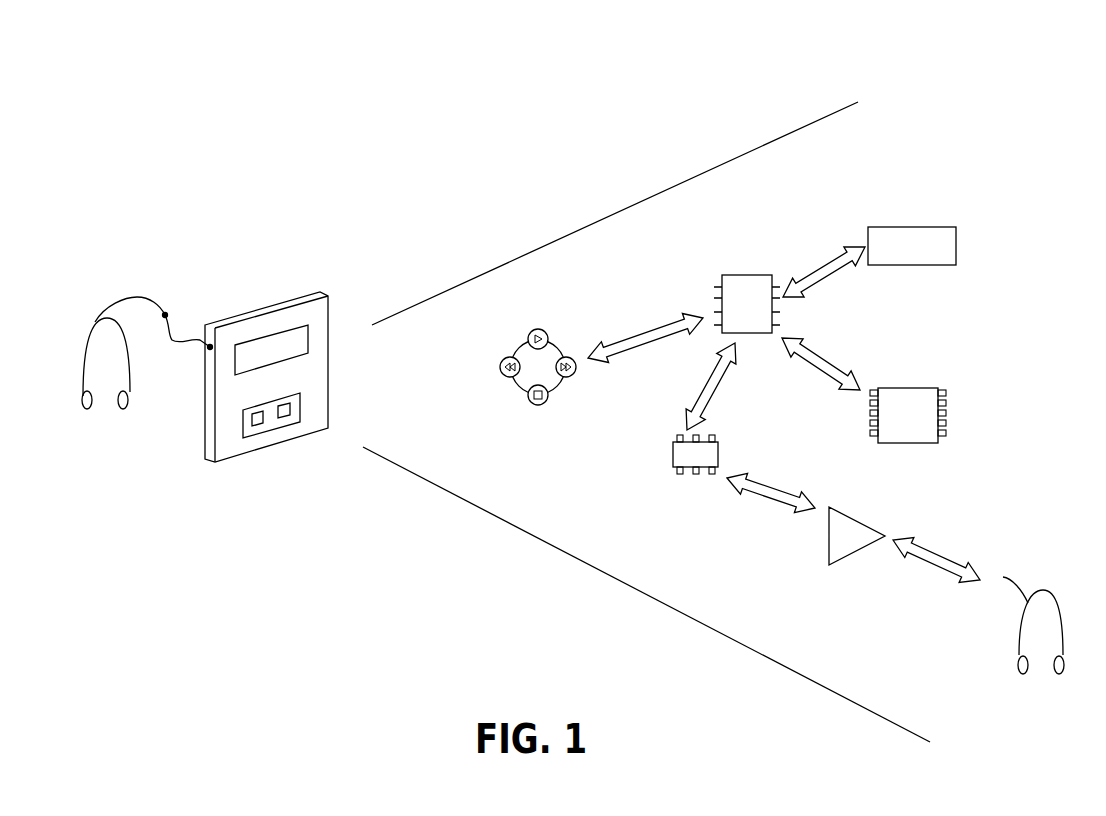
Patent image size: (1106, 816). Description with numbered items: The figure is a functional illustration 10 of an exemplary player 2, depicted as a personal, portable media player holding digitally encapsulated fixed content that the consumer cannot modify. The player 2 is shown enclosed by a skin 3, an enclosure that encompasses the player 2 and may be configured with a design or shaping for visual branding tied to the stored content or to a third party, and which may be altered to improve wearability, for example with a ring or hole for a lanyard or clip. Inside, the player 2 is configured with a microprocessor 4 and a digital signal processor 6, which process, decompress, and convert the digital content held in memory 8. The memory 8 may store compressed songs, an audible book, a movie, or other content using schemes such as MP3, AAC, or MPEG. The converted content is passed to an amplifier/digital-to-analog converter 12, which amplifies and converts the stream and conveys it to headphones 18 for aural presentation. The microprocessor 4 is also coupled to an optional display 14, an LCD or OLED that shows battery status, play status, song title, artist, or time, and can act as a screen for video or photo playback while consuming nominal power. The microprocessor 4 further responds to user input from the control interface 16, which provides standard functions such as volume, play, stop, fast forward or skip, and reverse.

The functional illustration 10 is at (585, 45).
The player 2 is at (308, 292).
The skin 3 is at (229, 447).
The microprocessor 4 is at (760, 275).
The digital signal processor 6 is at (673, 455).
The memory 8 is at (928, 388).
The amplifier/digital-to-analog converter 12 is at (842, 560).
The display 14 is at (922, 227).
The control interface 16 is at (566, 338).
The headphones 18 is at (1008, 643).